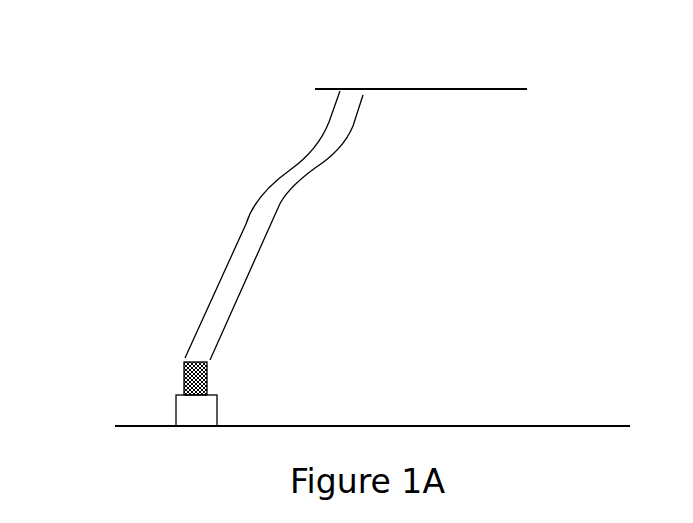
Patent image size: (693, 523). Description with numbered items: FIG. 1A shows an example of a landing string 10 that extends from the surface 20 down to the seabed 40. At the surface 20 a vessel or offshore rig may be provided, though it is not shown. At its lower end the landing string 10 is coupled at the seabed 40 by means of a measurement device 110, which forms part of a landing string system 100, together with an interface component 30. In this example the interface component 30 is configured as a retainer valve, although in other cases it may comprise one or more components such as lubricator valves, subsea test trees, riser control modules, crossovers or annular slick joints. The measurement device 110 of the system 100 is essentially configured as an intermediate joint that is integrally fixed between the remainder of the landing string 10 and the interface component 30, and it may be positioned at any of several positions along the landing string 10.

The landing string 10 is at (332, 226).
The surface 20 is at (490, 82).
The interface component 30 is at (183, 417).
The seabed 40 is at (458, 424).
The landing string system 100 is at (200, 355).
The measurement device 110 is at (208, 377).